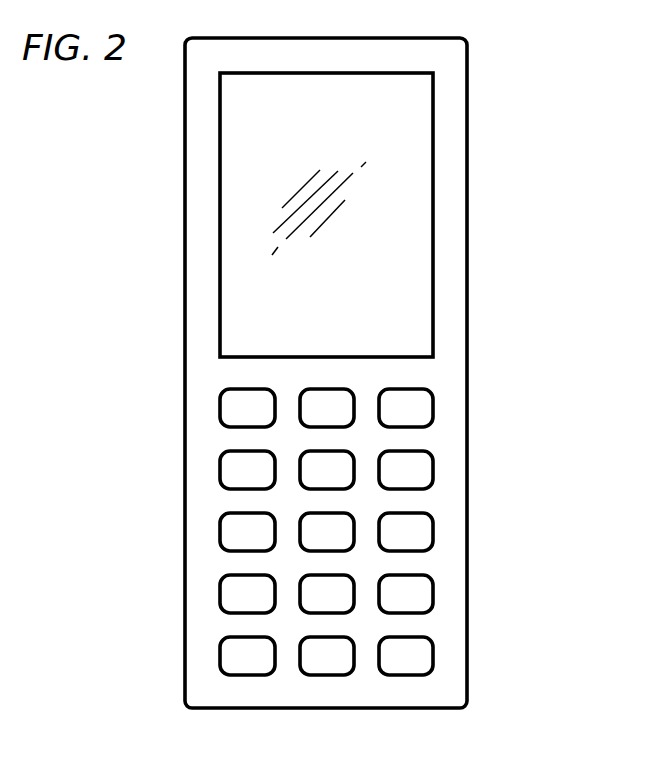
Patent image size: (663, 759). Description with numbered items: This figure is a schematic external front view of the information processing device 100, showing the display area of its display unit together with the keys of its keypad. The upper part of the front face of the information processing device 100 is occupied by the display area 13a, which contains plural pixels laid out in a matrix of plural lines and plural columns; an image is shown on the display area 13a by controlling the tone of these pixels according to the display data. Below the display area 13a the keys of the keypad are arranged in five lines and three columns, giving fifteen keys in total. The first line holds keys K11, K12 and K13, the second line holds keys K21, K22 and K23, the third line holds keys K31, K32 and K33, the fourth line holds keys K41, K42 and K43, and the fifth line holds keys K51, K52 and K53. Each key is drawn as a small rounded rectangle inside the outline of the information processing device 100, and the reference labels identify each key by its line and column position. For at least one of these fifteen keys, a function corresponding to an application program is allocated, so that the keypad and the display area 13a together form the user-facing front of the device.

The information processing device 100 is at (531, 73).
The display area 13a is at (422, 194).
The key K11 is at (231, 412).
The key K12 is at (340, 400).
The key K13 is at (418, 418).
The key K21 is at (231, 474).
The key K22 is at (340, 462).
The key K23 is at (418, 480).
The key K31 is at (231, 536).
The key K32 is at (340, 524).
The key K33 is at (418, 542).
The key K41 is at (231, 598).
The key K42 is at (340, 586).
The key K43 is at (418, 604).
The key K51 is at (231, 660).
The key K52 is at (340, 648).
The key K53 is at (418, 666).